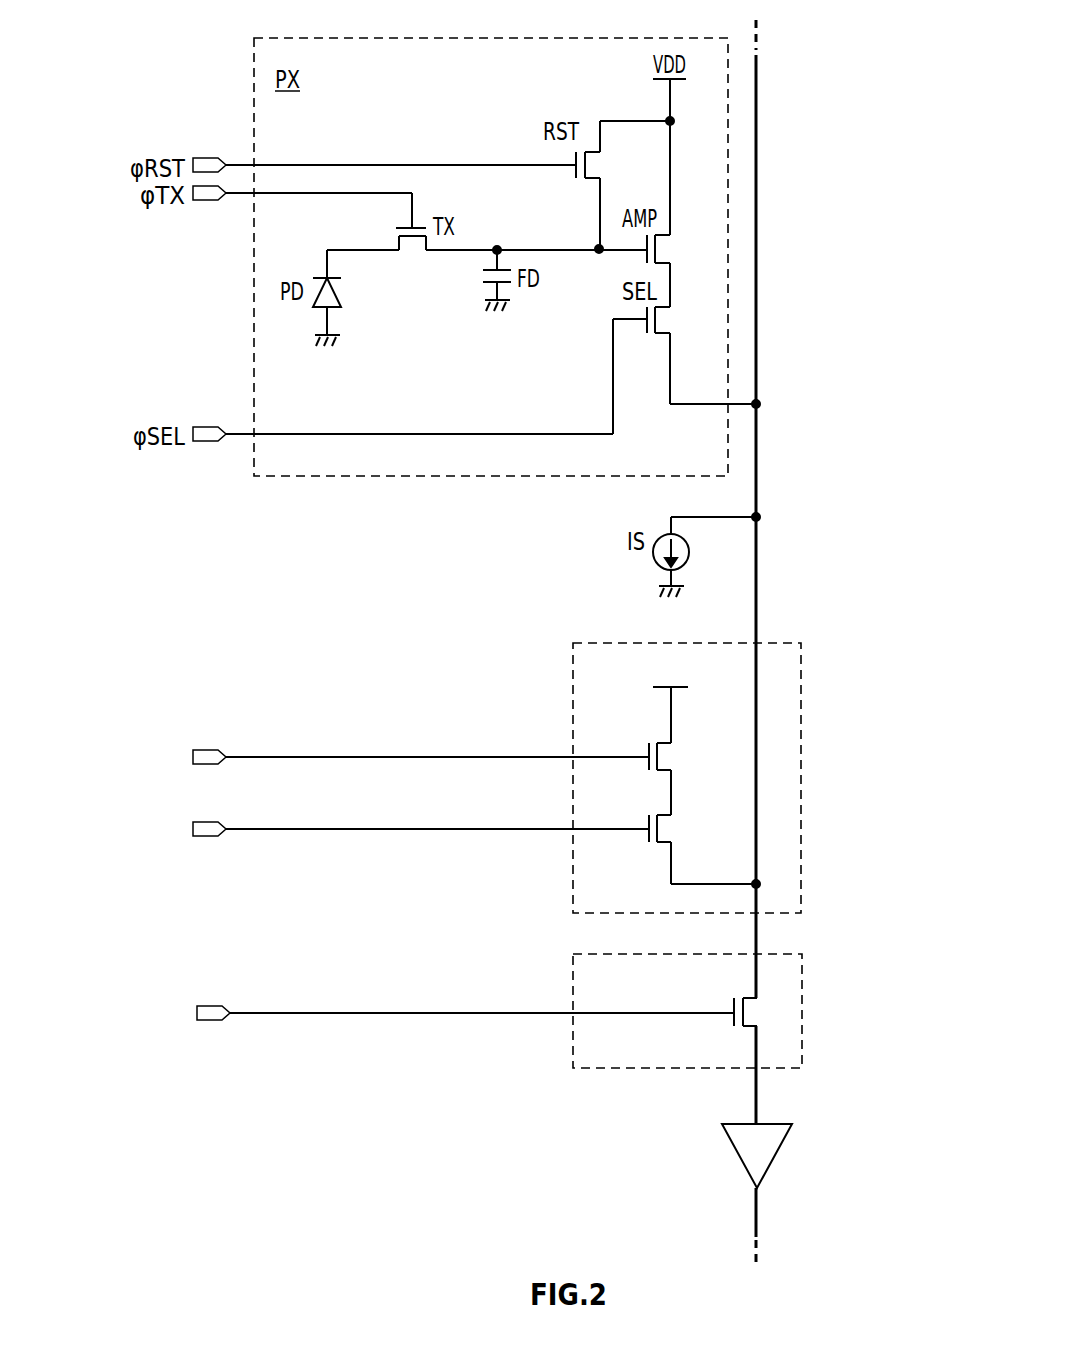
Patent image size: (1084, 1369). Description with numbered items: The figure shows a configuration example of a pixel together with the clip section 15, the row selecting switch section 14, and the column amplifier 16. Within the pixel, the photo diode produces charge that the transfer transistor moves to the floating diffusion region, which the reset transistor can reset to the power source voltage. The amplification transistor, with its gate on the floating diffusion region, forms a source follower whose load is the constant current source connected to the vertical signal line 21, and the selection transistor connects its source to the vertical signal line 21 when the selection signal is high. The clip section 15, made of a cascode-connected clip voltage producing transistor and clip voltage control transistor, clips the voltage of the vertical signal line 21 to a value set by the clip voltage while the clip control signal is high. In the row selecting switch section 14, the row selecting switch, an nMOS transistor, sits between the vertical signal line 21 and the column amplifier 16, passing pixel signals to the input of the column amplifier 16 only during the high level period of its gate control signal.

The vertical signal line 21 is at (756, 250).
The clip section 15 is at (801, 730).
The row selecting switch section 14 is at (802, 1015).
The column amplifier 16 is at (776, 1157).